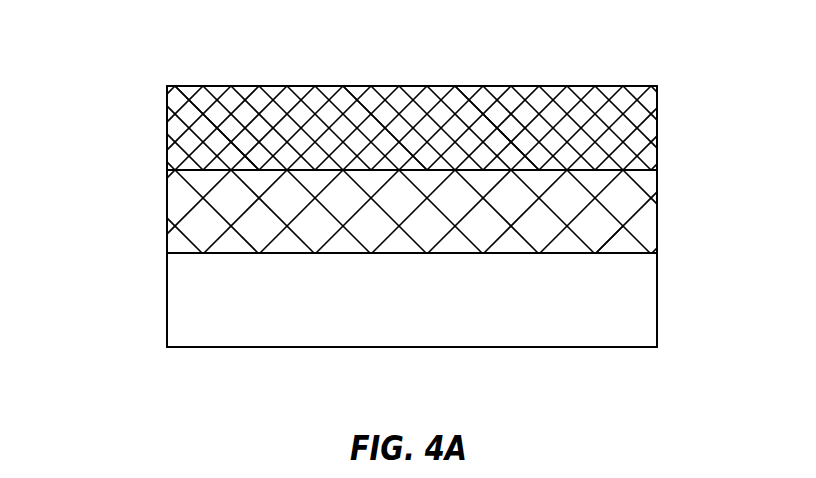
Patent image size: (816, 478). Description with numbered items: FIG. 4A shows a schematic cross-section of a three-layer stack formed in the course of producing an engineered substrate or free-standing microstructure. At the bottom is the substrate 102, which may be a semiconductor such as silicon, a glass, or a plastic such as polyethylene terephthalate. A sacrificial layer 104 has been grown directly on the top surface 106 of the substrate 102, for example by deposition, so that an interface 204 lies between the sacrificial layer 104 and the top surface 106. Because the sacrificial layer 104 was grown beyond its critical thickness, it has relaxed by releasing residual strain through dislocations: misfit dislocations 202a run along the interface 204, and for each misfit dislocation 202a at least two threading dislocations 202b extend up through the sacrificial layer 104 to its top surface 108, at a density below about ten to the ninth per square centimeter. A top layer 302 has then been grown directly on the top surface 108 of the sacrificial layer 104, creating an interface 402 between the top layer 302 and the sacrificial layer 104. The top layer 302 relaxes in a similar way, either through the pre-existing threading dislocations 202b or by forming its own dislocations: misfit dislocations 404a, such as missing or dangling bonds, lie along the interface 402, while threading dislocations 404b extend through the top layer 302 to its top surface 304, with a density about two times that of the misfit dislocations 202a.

The substrate 102 is at (188, 305).
The sacrificial layer 104 is at (146, 212).
The top surface of the substrate 106 is at (294, 253).
The top surface of the sacrificial layer 108 is at (222, 168).
The misfit dislocations 202a is at (600, 253).
The threading dislocations 202b is at (628, 233).
The interface 204 is at (657, 253).
The top layer 302 is at (178, 155).
The top surface of the top layer 304 is at (258, 86).
The interface 402 is at (657, 170).
The misfit dislocations 404a is at (463, 168).
The threading dislocations 404b is at (368, 114).